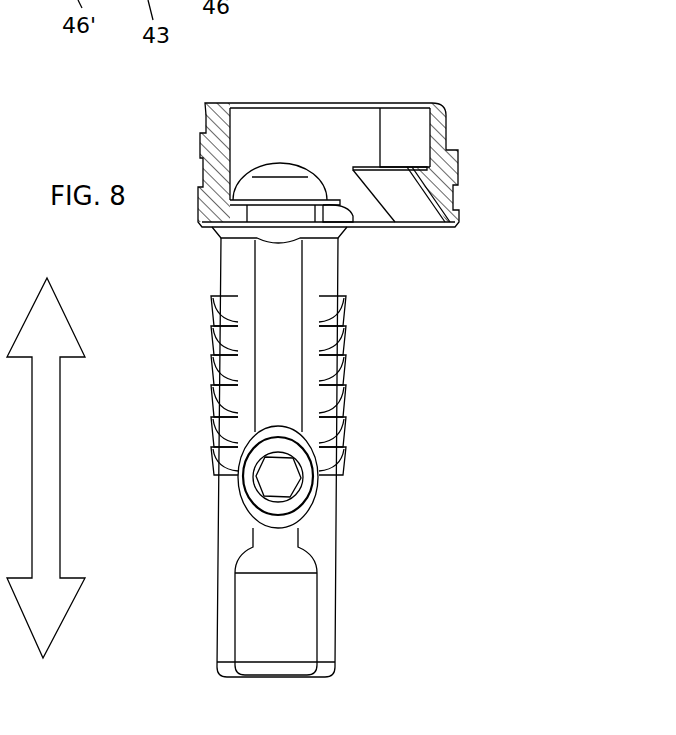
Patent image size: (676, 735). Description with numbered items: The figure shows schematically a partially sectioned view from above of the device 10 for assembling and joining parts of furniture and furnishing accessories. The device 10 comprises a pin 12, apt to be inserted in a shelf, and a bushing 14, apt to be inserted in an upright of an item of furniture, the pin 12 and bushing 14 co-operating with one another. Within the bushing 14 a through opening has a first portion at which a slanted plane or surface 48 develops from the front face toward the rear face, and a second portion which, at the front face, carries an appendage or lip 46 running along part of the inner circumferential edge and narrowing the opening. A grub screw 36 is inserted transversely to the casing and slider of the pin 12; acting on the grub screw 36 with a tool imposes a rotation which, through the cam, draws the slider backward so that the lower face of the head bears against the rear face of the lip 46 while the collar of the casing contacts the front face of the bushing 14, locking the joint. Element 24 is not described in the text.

The device for assembly/joining of parts of furniture 10 is at (435, 352).
The pin 12 is at (195, 517).
The bushing 14 is at (422, 80).
The dome member 24 is at (292, 157).
The grub screw 36 is at (280, 478).
The appendage or lip 46 is at (337, 172).
The slanted plane or surface 48 is at (410, 200).